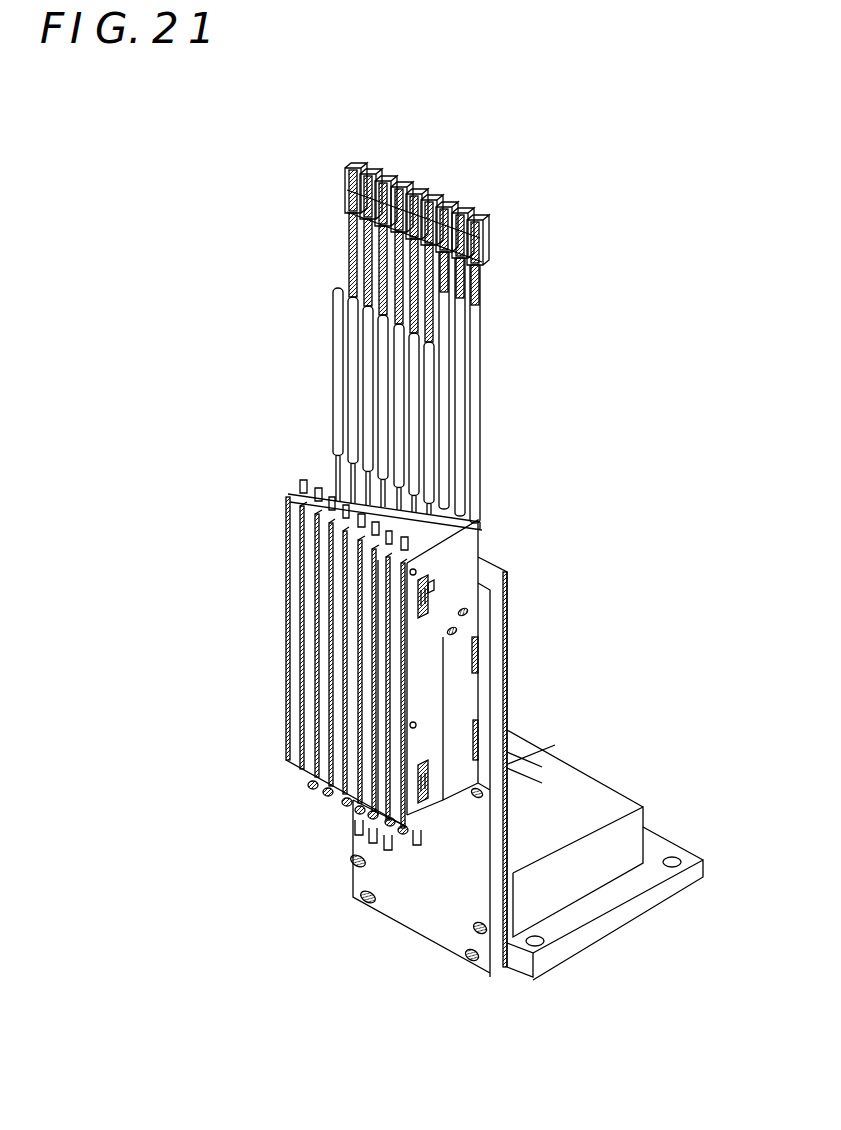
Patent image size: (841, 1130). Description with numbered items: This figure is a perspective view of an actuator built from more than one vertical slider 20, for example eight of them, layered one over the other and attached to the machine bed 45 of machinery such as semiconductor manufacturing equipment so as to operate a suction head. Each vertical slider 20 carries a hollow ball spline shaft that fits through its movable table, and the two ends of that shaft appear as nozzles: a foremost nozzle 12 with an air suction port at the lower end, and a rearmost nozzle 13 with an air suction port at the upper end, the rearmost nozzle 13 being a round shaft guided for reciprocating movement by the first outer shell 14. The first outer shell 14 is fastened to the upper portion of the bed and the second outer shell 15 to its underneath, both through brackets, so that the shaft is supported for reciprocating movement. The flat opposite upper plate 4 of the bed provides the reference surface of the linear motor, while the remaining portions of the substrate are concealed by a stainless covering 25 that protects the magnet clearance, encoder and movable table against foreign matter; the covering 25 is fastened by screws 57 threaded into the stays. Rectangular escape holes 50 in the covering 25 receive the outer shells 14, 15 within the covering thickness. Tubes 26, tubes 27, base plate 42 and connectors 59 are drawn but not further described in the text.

The opposite upper plate 4 is at (455, 668).
The foremost nozzle 12 is at (327, 790).
The rearmost nozzle 13 is at (312, 477).
The first outer shell 14 is at (432, 588).
The second outer shell 15 is at (352, 850).
The vertical slider 20 is at (300, 583).
The covering 25 is at (445, 570).
The tube 26 is at (410, 305).
The tube 27 is at (380, 378).
The base plate 42 is at (468, 846).
The machine bed 45 is at (577, 823).
The escape hole 50 is at (418, 598).
The screws 57 is at (457, 632).
The connector 59 is at (484, 248).